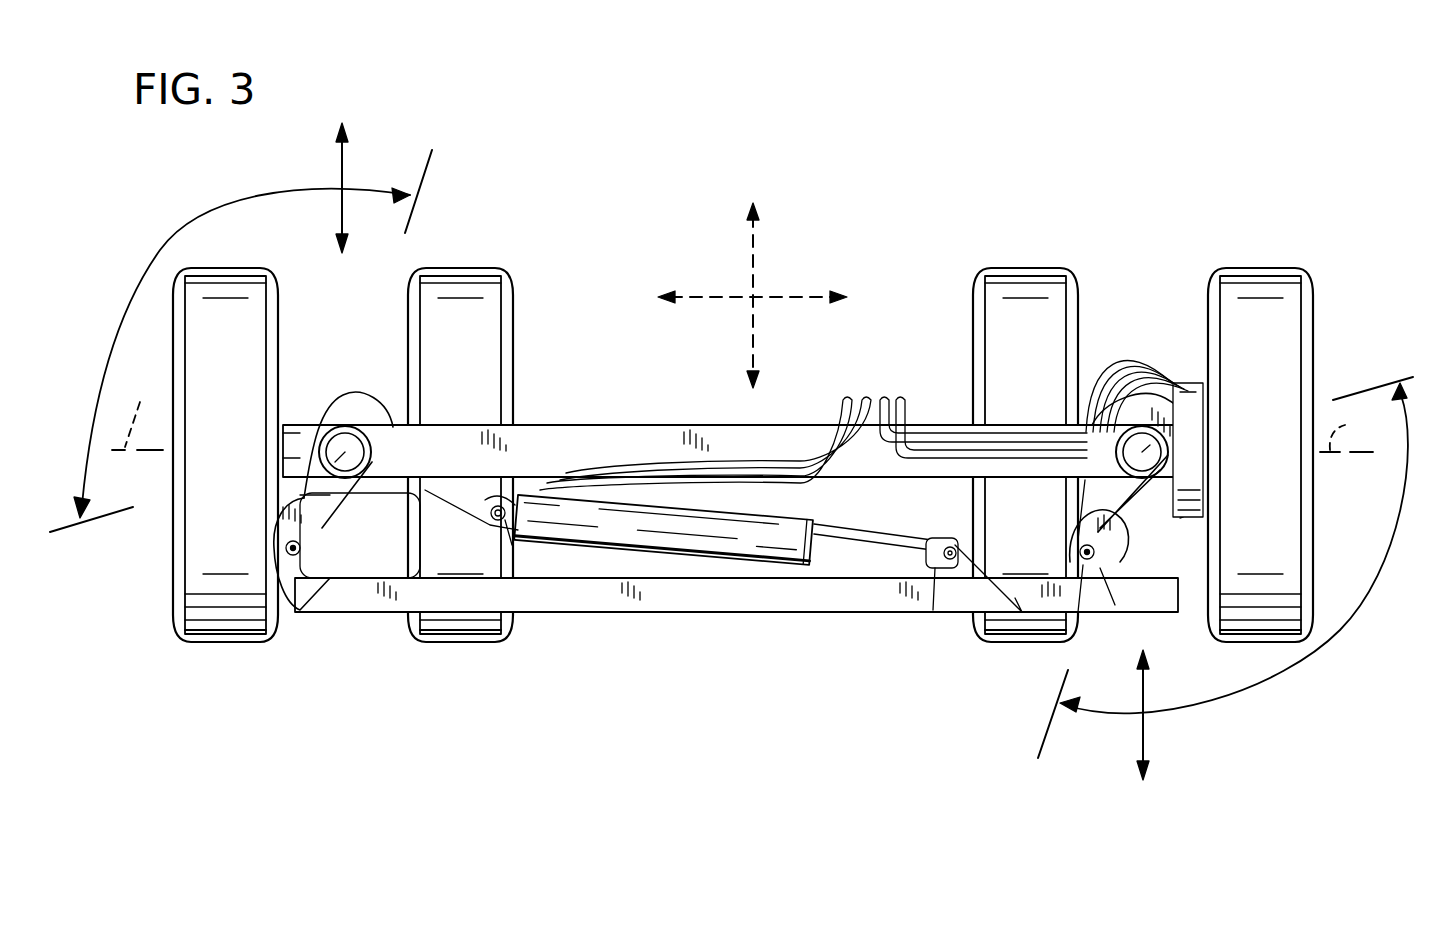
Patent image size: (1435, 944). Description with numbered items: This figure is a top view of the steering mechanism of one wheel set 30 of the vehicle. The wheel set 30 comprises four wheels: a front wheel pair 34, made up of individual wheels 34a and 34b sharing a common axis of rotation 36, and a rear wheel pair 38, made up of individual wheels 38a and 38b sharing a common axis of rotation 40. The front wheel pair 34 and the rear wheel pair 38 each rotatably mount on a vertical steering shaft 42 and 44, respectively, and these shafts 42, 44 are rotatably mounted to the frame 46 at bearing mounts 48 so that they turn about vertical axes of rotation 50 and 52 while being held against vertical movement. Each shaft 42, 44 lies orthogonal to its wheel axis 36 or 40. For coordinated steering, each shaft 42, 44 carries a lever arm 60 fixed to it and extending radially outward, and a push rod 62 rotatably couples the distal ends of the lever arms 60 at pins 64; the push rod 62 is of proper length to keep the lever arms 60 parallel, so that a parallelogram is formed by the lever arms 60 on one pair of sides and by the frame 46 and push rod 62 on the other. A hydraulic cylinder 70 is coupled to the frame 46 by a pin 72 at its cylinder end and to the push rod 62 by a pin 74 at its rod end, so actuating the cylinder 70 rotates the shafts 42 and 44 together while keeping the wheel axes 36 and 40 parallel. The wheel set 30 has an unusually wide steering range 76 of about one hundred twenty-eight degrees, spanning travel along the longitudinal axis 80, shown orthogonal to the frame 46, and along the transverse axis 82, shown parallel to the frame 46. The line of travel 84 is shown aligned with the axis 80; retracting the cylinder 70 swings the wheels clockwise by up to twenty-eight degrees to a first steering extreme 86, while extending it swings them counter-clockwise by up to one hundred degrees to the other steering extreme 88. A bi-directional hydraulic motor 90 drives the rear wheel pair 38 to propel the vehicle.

The wheel set 30 is at (1047, 213).
The front wheel pair 34 is at (157, 558).
The front wheel 34a is at (282, 325).
The front wheel 34b is at (407, 345).
The axis of rotation 36 is at (137, 413).
The rear wheel pair 38 is at (1328, 344).
The rear wheel 38a is at (1082, 323).
The rear wheel 38b is at (1198, 312).
The axis of rotation 40 is at (1353, 432).
The vertical steering shaft 42 is at (335, 500).
The vertical steering shaft 44 is at (1146, 465).
The frame 46 is at (603, 424).
The bearing mount 48 is at (372, 445).
The vertical axis of rotation 50 is at (345, 452).
The vertical axis of rotation 52 is at (1142, 452).
The lever arm 60 is at (385, 398).
The push rod 62 is at (685, 635).
The pin 64 is at (296, 560).
The hydraulic cylinder 70 is at (730, 500).
The pin 72 is at (505, 548).
The pin 74 is at (950, 548).
The steering range 76 is at (152, 255).
The longitudinal axis 80 is at (755, 243).
The transverse axis 82 is at (718, 298).
The line of travel 84 is at (337, 177).
The first steering extreme 86 is at (420, 180).
The steering extreme 88 is at (103, 510).
The hydraulic motor 90 is at (1196, 358).